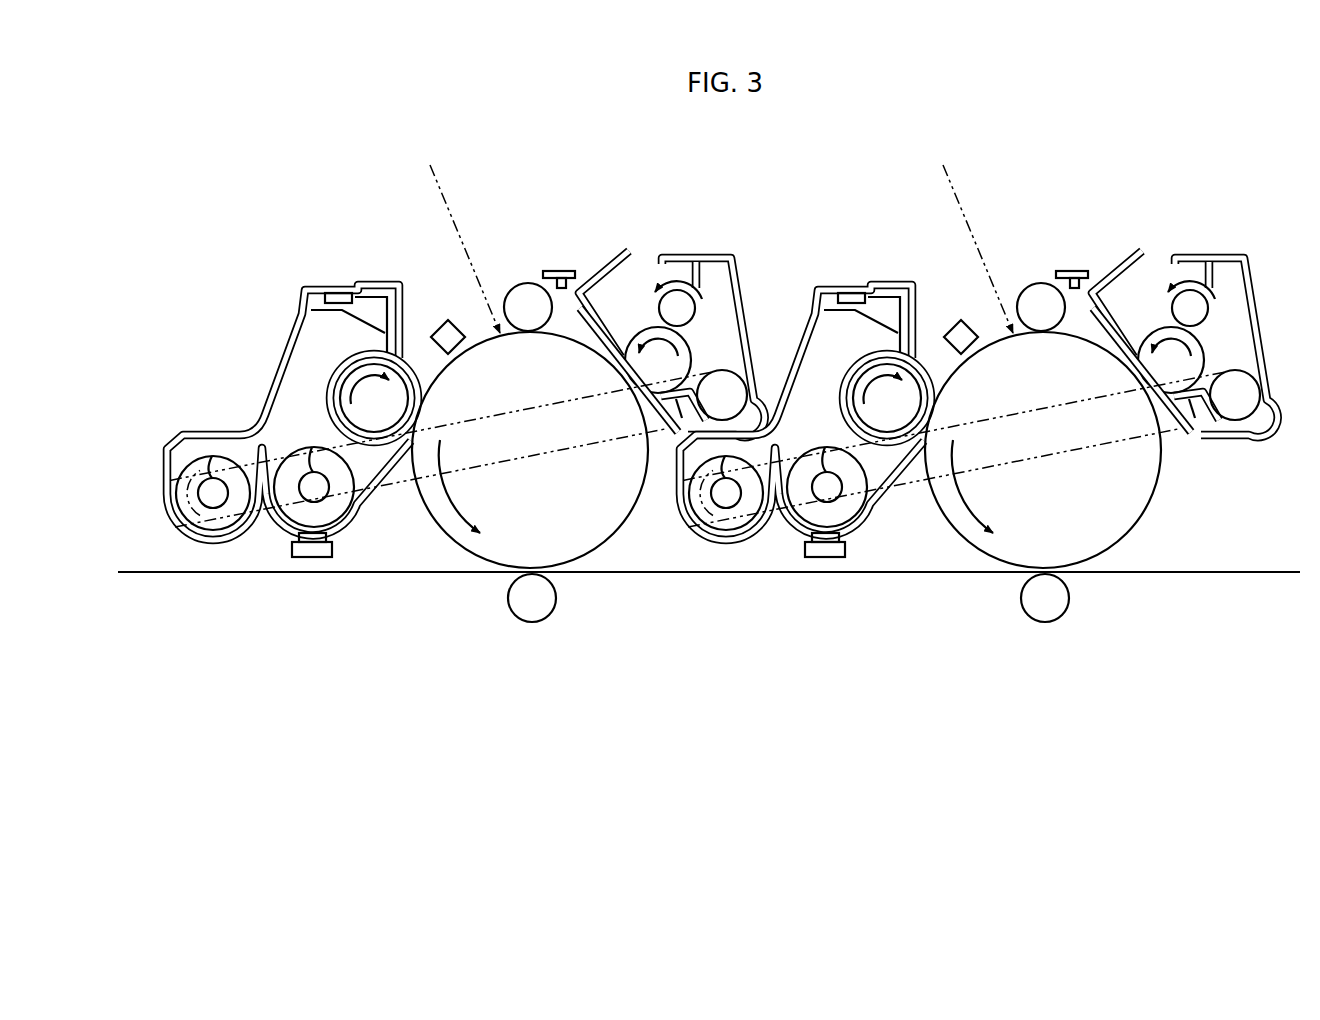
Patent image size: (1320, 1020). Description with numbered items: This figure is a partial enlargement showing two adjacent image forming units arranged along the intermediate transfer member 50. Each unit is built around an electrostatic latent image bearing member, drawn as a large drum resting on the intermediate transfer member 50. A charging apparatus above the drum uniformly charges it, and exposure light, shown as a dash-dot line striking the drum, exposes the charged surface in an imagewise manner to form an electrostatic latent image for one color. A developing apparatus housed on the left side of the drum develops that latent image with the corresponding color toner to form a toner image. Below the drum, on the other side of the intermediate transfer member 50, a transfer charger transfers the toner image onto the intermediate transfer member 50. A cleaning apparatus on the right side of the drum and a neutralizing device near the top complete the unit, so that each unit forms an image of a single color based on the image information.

The intermediate transfer member 50 is at (640, 574).